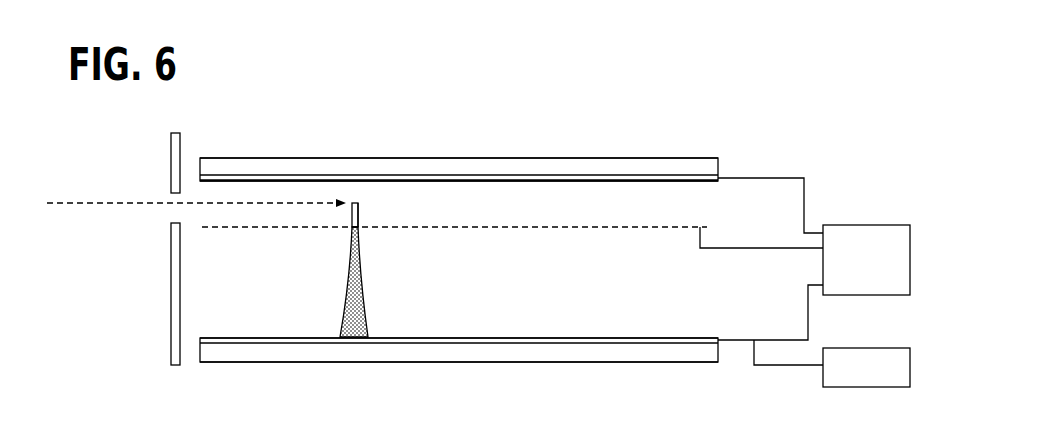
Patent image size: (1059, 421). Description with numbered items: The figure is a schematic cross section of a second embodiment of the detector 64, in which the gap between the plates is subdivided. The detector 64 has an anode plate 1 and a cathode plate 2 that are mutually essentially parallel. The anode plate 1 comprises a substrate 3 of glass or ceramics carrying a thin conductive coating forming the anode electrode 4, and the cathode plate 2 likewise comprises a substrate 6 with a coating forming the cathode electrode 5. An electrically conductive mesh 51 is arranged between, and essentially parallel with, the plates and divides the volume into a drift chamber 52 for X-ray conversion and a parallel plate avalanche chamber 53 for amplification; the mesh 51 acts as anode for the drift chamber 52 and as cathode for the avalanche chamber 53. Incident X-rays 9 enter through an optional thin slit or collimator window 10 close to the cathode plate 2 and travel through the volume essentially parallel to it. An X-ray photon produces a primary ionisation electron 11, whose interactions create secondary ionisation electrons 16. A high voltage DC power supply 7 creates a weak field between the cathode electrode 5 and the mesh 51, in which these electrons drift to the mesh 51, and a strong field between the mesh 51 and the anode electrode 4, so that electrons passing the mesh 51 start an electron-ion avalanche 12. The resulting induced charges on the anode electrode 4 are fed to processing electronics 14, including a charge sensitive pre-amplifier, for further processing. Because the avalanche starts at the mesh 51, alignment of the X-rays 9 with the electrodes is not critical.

The anode plate 1 is at (619, 368).
The cathode plate 2 is at (619, 151).
The substrate 3 is at (655, 356).
The anode electrode 4 is at (624, 336).
The cathode electrode 5 is at (770, 184).
The substrate 6 is at (661, 164).
The high voltage DC power supply 7 is at (814, 282).
The X-rays 9 is at (124, 201).
The collimator window 10 is at (168, 182).
The primary ionisation electron 11 is at (360, 203).
The electron-ion avalanche 12 is at (364, 282).
The processing electronics 14 is at (832, 363).
The secondary ionisation electrons 16 is at (361, 210).
The mesh 51 is at (438, 229).
The drift chamber 52 is at (545, 207).
The parallel plate avalanche chamber 53 is at (544, 284).
The detector 64 is at (443, 139).